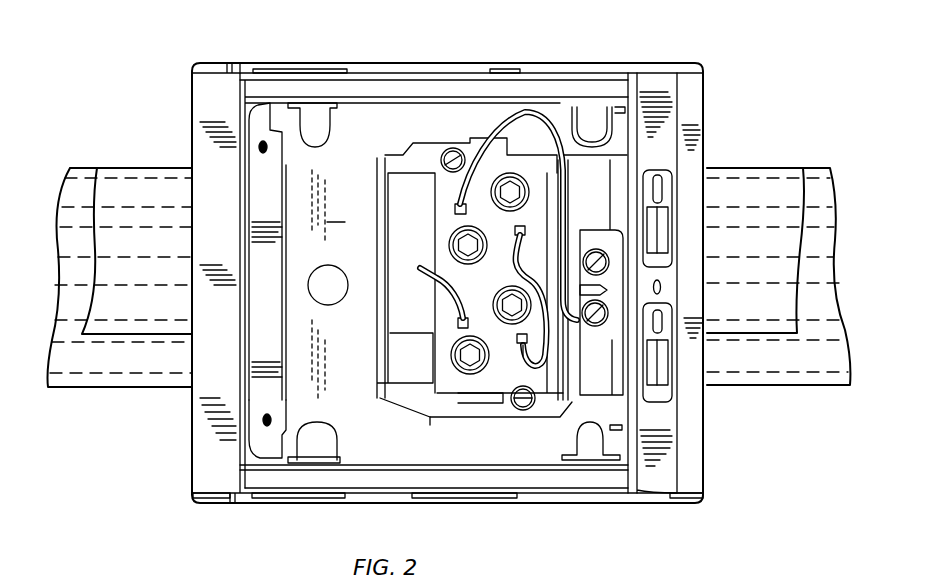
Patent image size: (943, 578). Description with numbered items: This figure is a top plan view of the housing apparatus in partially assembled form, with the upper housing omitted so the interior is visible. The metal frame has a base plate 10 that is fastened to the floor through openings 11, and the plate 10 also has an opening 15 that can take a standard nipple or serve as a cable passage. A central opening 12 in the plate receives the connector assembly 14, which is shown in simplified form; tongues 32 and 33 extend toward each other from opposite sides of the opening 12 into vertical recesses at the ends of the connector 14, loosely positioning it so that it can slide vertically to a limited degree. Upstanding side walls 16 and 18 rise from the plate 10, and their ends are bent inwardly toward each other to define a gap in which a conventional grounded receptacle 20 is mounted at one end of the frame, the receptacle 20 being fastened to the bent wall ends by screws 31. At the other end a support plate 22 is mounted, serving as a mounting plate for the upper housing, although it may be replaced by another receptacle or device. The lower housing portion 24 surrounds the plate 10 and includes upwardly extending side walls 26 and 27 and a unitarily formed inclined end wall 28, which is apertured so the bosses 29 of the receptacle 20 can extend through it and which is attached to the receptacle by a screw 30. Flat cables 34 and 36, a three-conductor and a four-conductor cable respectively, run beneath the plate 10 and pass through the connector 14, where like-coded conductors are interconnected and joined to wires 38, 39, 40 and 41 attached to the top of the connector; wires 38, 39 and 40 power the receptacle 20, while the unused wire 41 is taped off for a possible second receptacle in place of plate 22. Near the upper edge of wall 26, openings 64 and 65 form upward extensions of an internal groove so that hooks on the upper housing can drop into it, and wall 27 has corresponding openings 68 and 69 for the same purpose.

The base plate 10 is at (341, 210).
The openings 11 is at (330, 143).
The central opening 12 is at (417, 140).
The connector assembly 14 is at (427, 247).
The opening 15 is at (320, 295).
The side wall 16 is at (450, 97).
The side wall 18 is at (527, 468).
The receptacle 20 is at (590, 403).
The support plate 22 is at (290, 327).
The lower housing portion 24 is at (192, 115).
The side wall 26 is at (245, 63).
The side wall 27 is at (287, 503).
The end wall 28 is at (667, 87).
The bosses 29 is at (667, 330).
The screw 30 is at (661, 288).
The screws 31 is at (620, 105).
The tongue 32 is at (461, 148).
The tongue 33 is at (457, 417).
The flat cable 34 is at (143, 335).
The flat cable 36 is at (145, 388).
The wire 38 is at (505, 267).
The wire 39 is at (527, 372).
The wire 40 is at (453, 198).
The wire 41 is at (427, 277).
The opening 64 is at (297, 69).
The opening 65 is at (507, 69).
The opening 68 is at (308, 498).
The opening 69 is at (473, 498).